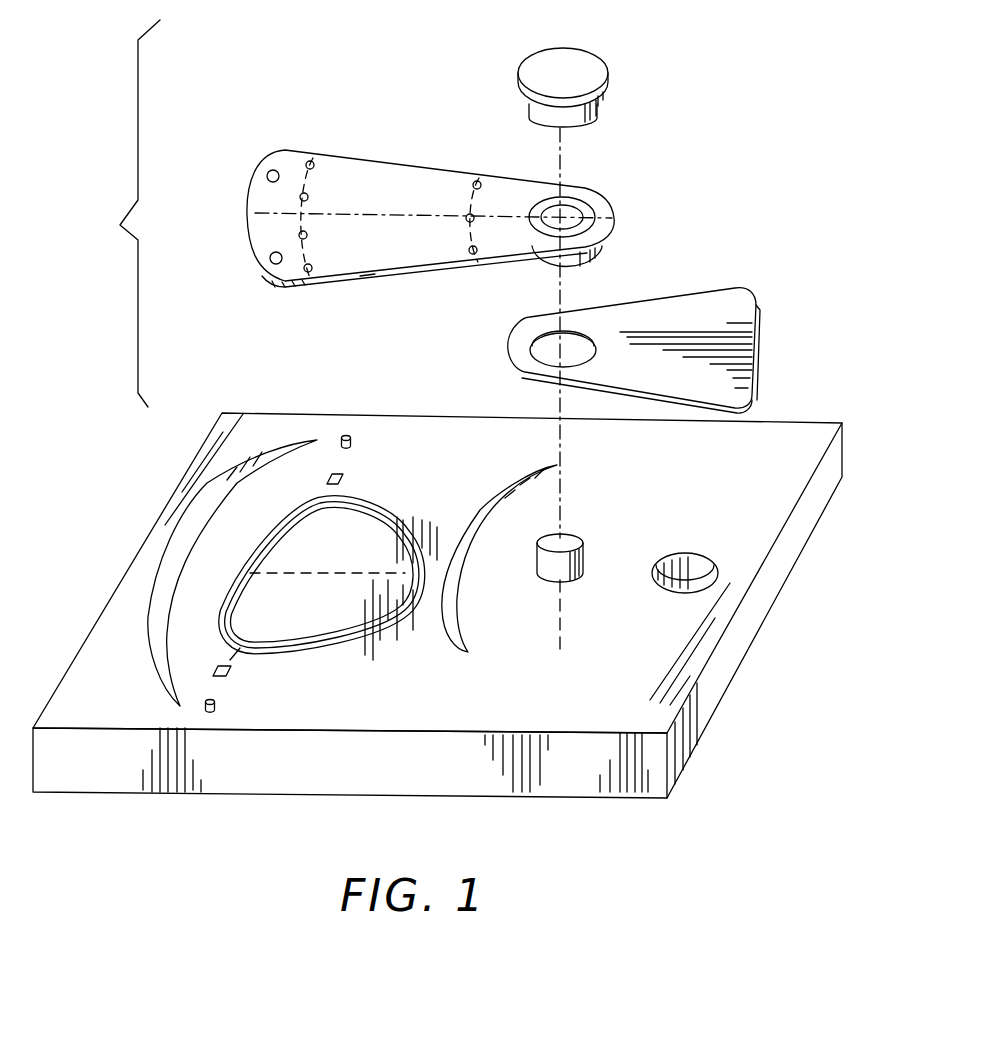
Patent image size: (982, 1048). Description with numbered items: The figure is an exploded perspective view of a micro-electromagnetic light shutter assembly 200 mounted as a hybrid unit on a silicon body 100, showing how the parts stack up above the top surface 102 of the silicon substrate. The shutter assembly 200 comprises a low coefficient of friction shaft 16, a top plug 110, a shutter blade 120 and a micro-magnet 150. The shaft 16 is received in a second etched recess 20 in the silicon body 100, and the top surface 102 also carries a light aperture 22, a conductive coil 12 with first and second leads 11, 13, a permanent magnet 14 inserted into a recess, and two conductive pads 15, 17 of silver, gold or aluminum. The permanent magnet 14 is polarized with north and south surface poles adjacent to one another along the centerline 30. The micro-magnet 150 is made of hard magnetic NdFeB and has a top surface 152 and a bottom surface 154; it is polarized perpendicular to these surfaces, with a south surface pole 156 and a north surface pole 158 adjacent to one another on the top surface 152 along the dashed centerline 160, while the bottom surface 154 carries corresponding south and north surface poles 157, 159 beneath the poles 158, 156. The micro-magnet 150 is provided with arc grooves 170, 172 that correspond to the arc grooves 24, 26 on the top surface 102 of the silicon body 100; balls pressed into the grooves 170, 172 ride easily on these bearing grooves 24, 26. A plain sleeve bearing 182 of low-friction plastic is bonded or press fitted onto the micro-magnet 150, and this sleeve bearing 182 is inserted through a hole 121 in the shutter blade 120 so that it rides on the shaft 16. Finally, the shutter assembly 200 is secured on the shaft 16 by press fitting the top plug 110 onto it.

The silicon body 100 is at (775, 600).
The top surface 102 is at (797, 424).
The top plug 110 is at (587, 73).
The shutter blade 120 is at (740, 353).
The hole 121 is at (530, 350).
The micro-magnet 150 is at (285, 149).
The top surface 152 is at (387, 257).
The bottom surface 154 is at (368, 278).
The south surface pole 156 is at (337, 167).
The north surface pole 158 is at (330, 273).
The south surface pole 157 is at (278, 258).
The north surface pole 159 is at (273, 177).
The centerline 160 is at (360, 212).
The arc groove 170 is at (310, 272).
The arc groove 172 is at (477, 263).
The sleeve bearing 182 is at (590, 222).
The shutter assembly 200 is at (110, 213).
The first lead 11 is at (320, 501).
The conductive coil 12 is at (380, 630).
The second lead 13 is at (230, 666).
The permanent magnet 14 is at (317, 620).
The conductive pad 15 is at (343, 476).
The conductive pad 17 is at (228, 680).
The shaft 16 is at (583, 555).
The second etched recess 20 is at (570, 580).
The light aperture 22 is at (707, 565).
The arc groove 24 is at (148, 650).
The arc groove 26 is at (457, 592).
The centerline 30 is at (365, 572).